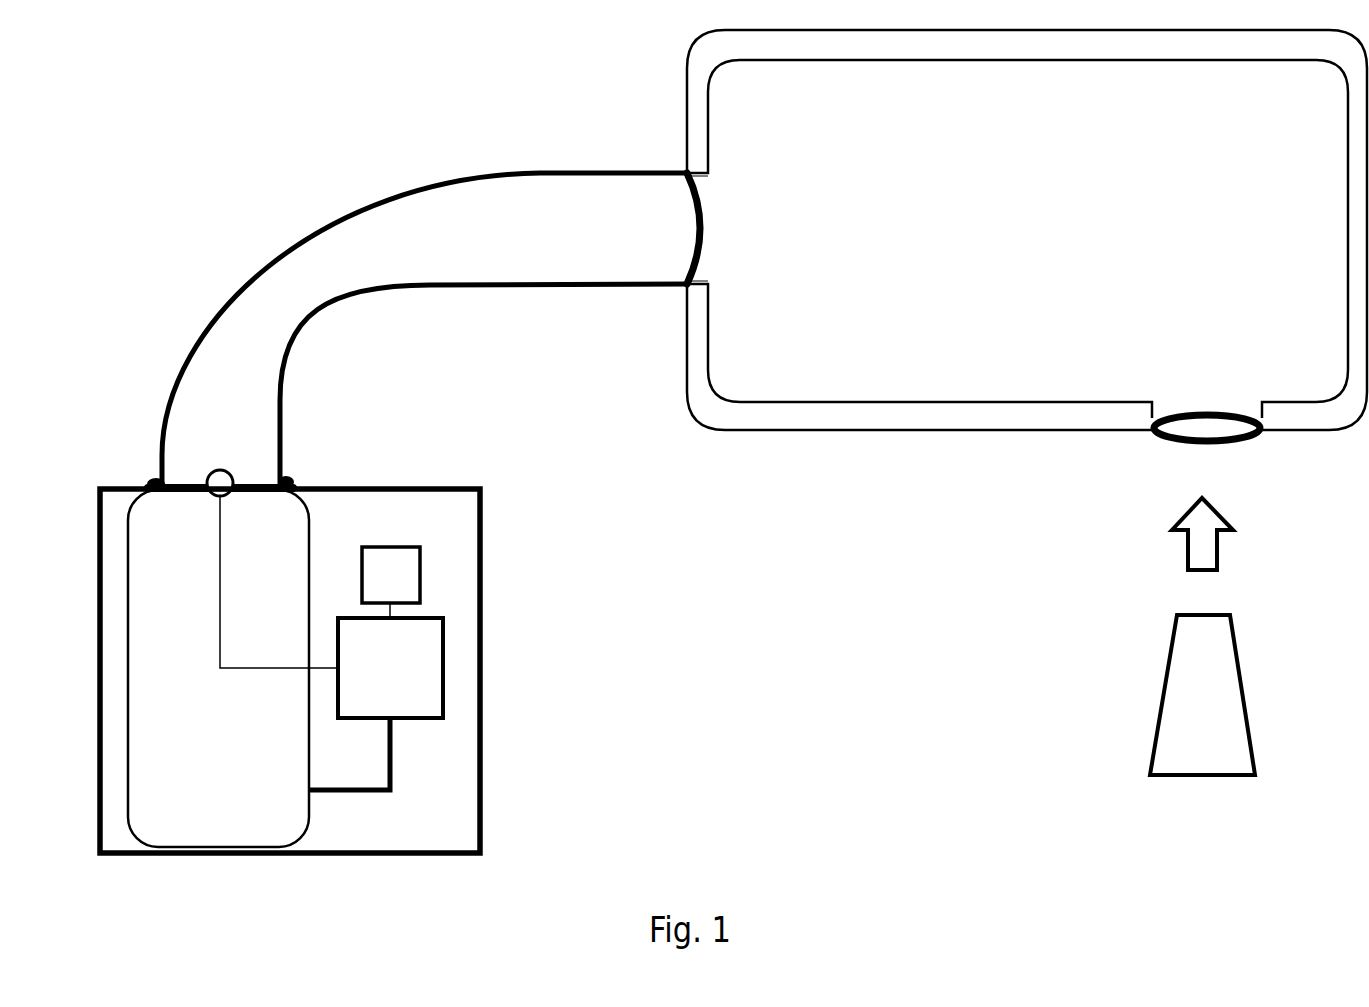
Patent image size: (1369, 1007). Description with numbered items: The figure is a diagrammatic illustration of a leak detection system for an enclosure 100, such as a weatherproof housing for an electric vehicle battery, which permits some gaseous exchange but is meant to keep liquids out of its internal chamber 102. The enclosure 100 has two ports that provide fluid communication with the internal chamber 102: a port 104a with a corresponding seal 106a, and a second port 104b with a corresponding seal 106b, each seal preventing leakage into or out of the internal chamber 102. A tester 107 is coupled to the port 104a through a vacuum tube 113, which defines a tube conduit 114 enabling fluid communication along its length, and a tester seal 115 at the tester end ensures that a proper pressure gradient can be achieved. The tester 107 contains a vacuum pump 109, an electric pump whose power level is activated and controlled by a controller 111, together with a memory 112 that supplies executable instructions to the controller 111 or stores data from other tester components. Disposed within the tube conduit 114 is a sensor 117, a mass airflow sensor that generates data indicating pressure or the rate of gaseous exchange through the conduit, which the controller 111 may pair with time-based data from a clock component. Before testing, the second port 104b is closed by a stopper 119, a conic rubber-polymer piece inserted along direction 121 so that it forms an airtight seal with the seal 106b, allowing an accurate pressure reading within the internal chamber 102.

The enclosure 100 is at (700, 114).
The internal chamber 102 is at (945, 128).
The port 104a is at (735, 225).
The seal 106a is at (697, 253).
The second port 104b is at (1222, 366).
The seal 106b is at (1172, 414).
The tube conduit 114 is at (424, 330).
The vacuum tube 113 is at (507, 288).
The tester seal 115 is at (295, 480).
The sensor 117 is at (207, 482).
The tester 107 is at (377, 536).
The vacuum pump 109 is at (195, 724).
The memory 112 is at (372, 589).
The controller 111 is at (372, 684).
The direction 121 is at (1197, 546).
The stopper 119 is at (1184, 732).